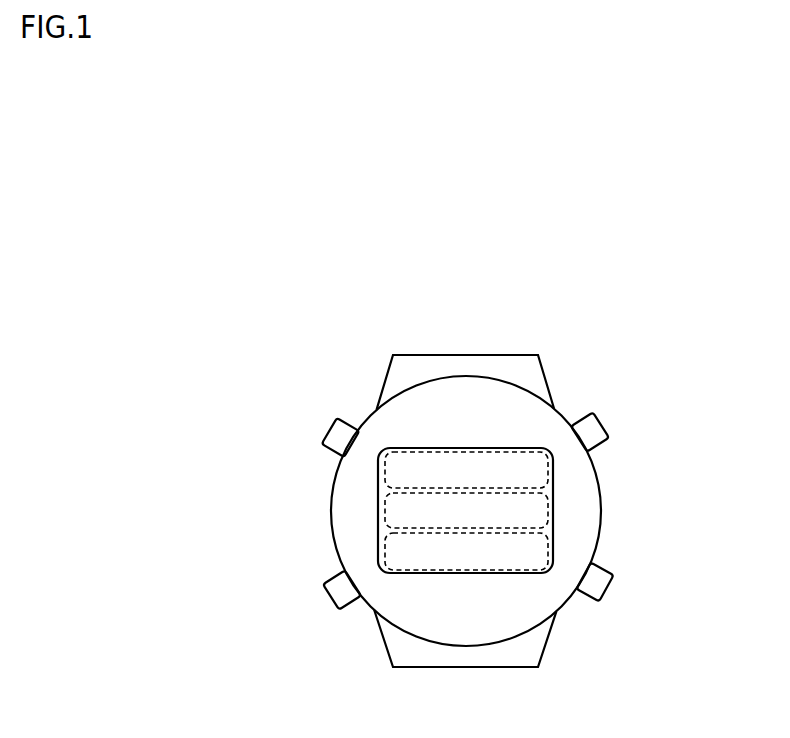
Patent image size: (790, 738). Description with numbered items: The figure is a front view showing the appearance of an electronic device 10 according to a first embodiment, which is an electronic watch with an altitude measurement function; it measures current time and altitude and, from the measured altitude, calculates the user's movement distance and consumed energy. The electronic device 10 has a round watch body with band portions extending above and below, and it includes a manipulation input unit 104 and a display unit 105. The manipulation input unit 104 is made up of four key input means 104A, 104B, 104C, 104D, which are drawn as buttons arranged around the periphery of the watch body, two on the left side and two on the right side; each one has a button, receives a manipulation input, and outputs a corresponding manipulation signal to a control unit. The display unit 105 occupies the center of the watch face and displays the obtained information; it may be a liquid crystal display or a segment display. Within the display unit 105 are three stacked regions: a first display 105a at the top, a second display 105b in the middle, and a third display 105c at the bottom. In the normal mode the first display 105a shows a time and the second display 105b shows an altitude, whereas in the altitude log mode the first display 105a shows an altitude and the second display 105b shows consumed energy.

The electronic device 10 is at (212, 313).
The manipulation input unit 104 is at (213, 415).
The key input means 104A is at (343, 587).
The key input means 104B is at (341, 433).
The key input means 104C is at (588, 428).
The key input means 104D is at (591, 579).
The display unit 105 is at (415, 447).
The first display 105a is at (549, 467).
The second display 105b is at (549, 505).
The third display 105c is at (549, 548).